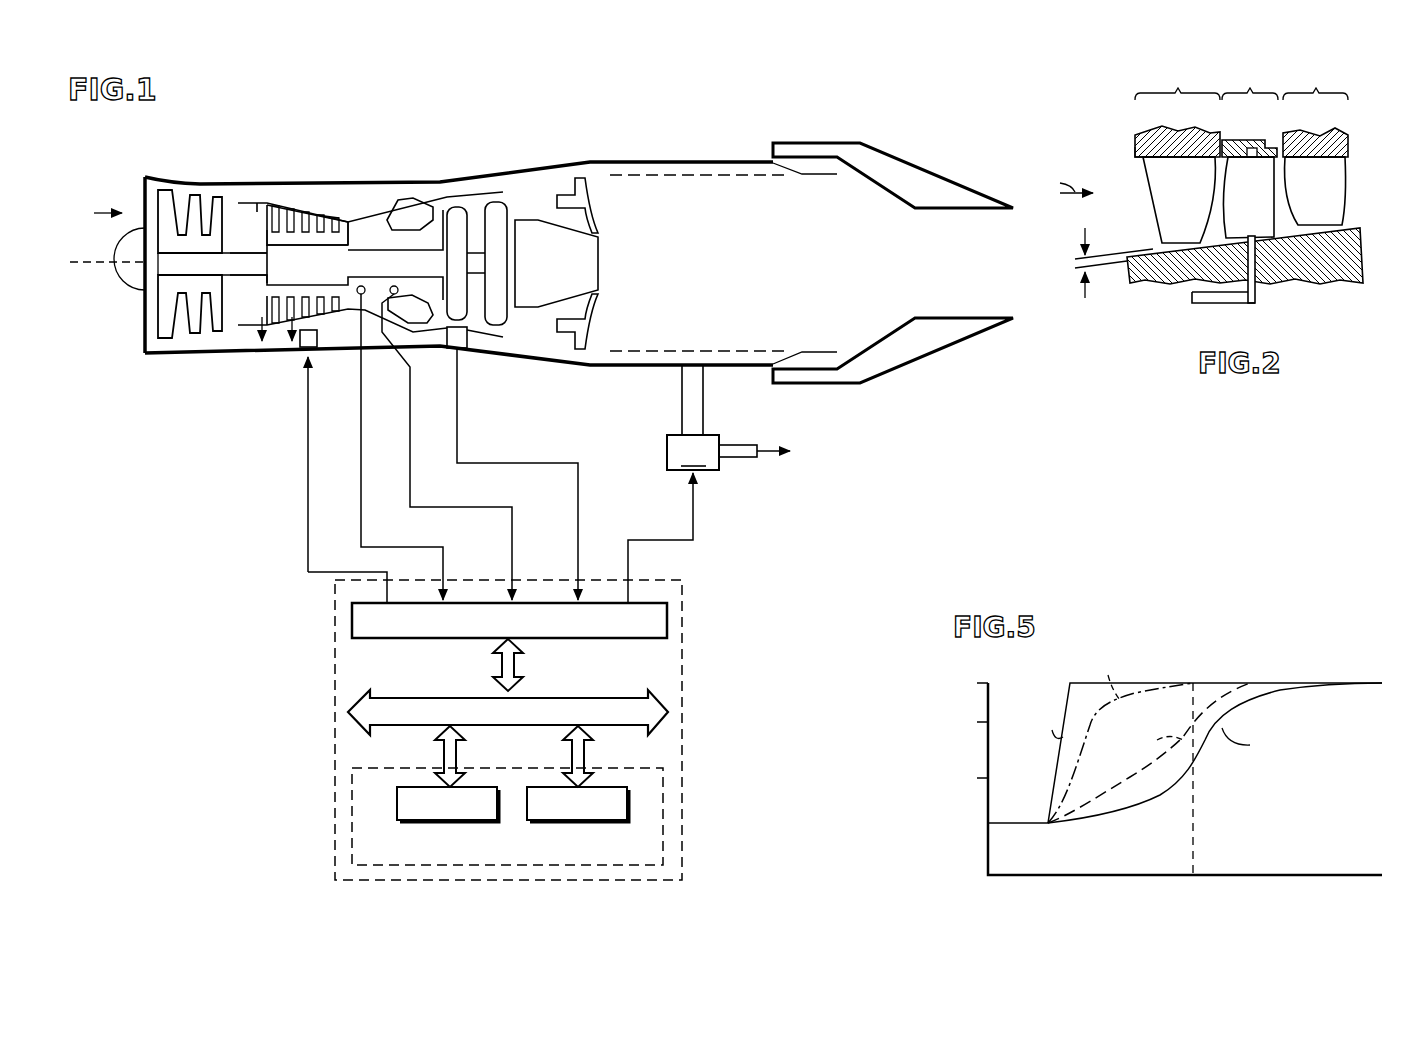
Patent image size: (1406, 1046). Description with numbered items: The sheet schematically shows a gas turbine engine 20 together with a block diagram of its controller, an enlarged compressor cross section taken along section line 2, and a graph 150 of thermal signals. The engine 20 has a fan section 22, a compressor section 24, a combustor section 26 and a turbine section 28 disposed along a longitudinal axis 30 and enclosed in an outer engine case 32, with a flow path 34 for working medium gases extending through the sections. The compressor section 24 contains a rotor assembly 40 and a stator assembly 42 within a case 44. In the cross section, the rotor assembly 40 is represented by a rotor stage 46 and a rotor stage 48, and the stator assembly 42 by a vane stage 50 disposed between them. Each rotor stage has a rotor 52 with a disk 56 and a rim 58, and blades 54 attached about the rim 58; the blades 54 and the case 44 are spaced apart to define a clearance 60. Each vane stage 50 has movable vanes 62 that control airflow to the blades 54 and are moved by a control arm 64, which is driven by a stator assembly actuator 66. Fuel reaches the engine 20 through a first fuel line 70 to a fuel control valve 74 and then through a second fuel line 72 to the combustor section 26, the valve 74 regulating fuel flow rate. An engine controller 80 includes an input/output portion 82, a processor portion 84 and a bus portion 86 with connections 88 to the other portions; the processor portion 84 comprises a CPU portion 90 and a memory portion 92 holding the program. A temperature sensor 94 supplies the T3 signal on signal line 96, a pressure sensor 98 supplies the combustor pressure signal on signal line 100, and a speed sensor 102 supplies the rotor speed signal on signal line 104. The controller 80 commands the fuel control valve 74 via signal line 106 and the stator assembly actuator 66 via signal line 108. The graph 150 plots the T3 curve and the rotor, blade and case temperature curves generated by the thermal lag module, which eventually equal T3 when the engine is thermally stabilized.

In FIG. 1, the gas turbine engine 20 is at (579, 220).
In FIG. 1, the fan section 22 is at (206, 233).
In FIG. 1, the compressor section 24 is at (361, 233).
In FIG. 1, the combustor section 26 is at (432, 150).
In FIG. 1, the turbine section 28 is at (500, 150).
In FIG. 1, the longitudinal axis 30 is at (110, 256).
In FIG. 1, the outer engine case 32 is at (556, 160).
In FIG. 1, the flow path 34 is at (95, 213).
In FIG. 2, the flow path 34 is at (1060, 183).
In FIG. 1, the rotor assembly 40 is at (381, 197).
In FIG. 2, the rotor assembly 40 is at (1270, 135).
In FIG. 1, the stator assembly 42 is at (334, 212).
In FIG. 2, the stator assembly 42 is at (1249, 148).
In FIG. 1, the case 44 is at (292, 205).
In FIG. 2, the case 44 is at (1178, 272).
In FIG. 2, the rotor stage 46 is at (1143, 153).
In FIG. 2, the rotor stage 48 is at (1315, 144).
In FIG. 2, the vane stage 50 is at (1250, 139).
In FIG. 2, the rotor 52 is at (1130, 143).
In FIG. 1, the blades 54 is at (278, 205).
In FIG. 2, the blades 54 is at (1191, 215).
In FIG. 1, the disk 56 is at (267, 249).
In FIG. 1, the rim 58 is at (275, 235).
In FIG. 2, the rim 58 is at (1134, 150).
In FIG. 2, the clearance 60 is at (1110, 248).
In FIG. 2, the vane 62 is at (1266, 220).
In FIG. 2, the control arm 64 is at (1220, 298).
In FIG. 1, the stator assembly actuator 66 is at (316, 349).
In FIG. 1, the first fuel line 70 is at (735, 458).
In FIG. 1, the second fuel line 72 is at (696, 424).
In FIG. 1, the fuel control valve 74 is at (693, 452).
In FIG. 1, the engine controller 80 is at (540, 730).
In FIG. 1, the input/output portion 82 is at (447, 640).
In FIG. 1, the processor portion 84 is at (507, 801).
In FIG. 1, the bus portion 86 is at (450, 697).
In FIG. 1, the connections 88 is at (518, 668).
In FIG. 1, the CPU portion 90 is at (628, 800).
In FIG. 1, the memory portion 92 is at (397, 803).
In FIG. 1, the temperature sensor 94 is at (361, 284).
In FIG. 1, the signal line 96 is at (443, 552).
In FIG. 1, the pressure sensor 98 is at (395, 284).
In FIG. 1, the signal line 100 is at (512, 520).
In FIG. 1, the speed sensor 102 is at (468, 338).
In FIG. 1, the signal line 104 is at (580, 477).
In FIG. 1, the signal line 106 is at (693, 520).
In FIG. 1, the signal line 108 is at (308, 545).
In FIG. 1, the section line 2— 2 is at (277, 346).
In FIG. 5, the graph 150 is at (1297, 655).